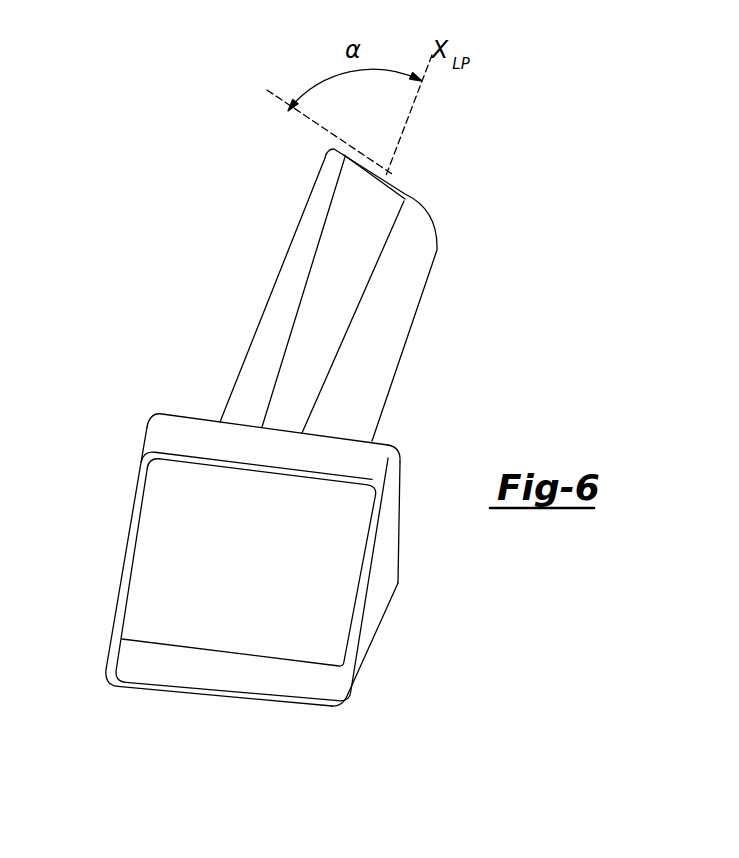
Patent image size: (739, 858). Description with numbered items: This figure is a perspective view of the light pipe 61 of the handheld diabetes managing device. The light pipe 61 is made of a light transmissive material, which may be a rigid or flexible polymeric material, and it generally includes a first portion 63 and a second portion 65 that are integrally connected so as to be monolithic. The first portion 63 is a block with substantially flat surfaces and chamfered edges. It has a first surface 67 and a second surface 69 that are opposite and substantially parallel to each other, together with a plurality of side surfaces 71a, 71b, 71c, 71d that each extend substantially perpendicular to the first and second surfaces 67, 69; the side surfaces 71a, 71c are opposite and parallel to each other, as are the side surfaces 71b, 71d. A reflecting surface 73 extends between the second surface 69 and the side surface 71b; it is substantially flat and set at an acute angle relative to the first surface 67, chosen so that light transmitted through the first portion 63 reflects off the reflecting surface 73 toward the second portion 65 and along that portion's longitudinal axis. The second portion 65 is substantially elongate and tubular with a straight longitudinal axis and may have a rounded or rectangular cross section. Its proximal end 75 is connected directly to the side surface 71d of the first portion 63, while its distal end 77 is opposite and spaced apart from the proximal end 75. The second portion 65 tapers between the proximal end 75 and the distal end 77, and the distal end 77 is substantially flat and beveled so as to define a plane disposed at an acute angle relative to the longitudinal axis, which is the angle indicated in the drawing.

The light pipe 61 is at (459, 168).
The first portion 63 is at (163, 485).
The second portion 65 is at (285, 283).
The first surface 67 is at (370, 656).
The second surface 69 is at (248, 460).
The side surface 71a is at (123, 567).
The side surface 71b is at (213, 673).
The side surface 71c is at (388, 542).
The side surface 71d is at (400, 485).
The reflecting surface 73 is at (227, 590).
The proximal end 75 is at (277, 415).
The distal end 77 is at (400, 190).